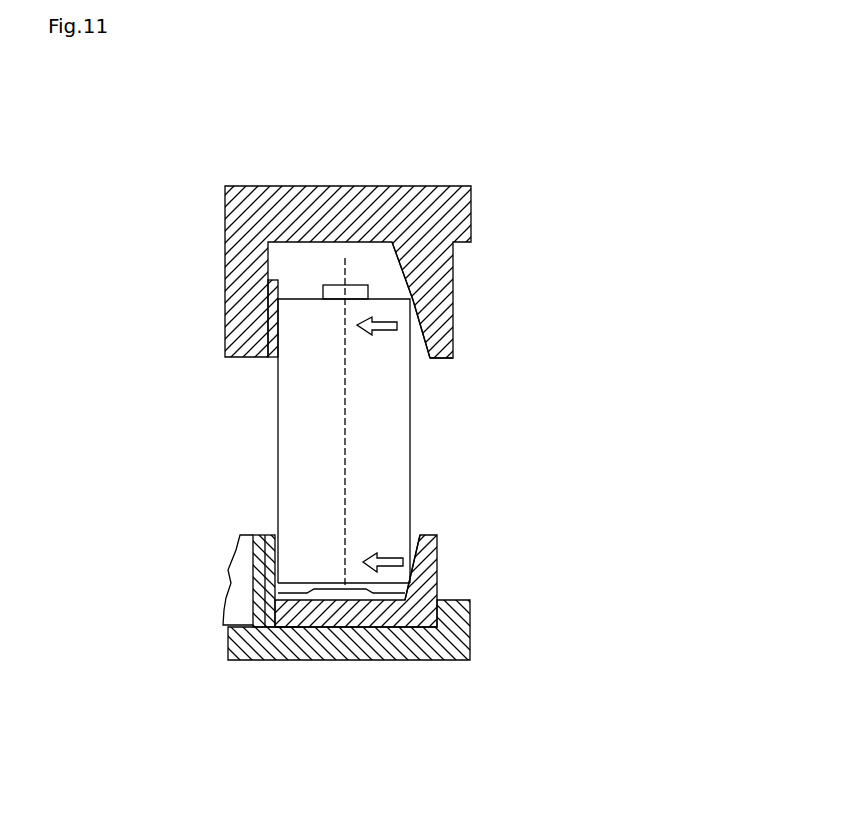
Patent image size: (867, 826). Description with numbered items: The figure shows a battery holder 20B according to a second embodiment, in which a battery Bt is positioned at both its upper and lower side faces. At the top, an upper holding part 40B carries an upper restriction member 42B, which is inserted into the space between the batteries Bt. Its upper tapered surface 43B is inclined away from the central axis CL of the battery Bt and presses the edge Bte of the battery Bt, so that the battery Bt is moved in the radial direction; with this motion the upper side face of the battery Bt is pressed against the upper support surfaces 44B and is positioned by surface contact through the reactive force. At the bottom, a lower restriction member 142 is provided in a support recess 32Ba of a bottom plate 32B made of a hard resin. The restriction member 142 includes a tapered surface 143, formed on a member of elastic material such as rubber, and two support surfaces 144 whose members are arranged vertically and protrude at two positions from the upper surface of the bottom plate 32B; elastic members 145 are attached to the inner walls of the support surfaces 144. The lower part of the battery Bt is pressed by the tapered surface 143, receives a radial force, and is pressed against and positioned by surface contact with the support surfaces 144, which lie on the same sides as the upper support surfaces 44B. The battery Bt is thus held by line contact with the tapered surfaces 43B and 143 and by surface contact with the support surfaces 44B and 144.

The battery holder 20B is at (517, 200).
The upper holding member 40B is at (418, 186).
The upper restriction member 42B is at (435, 265).
The edge of the battery Bte is at (413, 292).
The upper tapered surface 43B is at (424, 342).
The upper support surfaces 44B is at (272, 357).
The battery Bt is at (411, 432).
The central axis of the battery CL is at (345, 486).
The lower restriction member 142 is at (165, 450).
The lower tapered surface 143 is at (418, 553).
The lower support surfaces 144 is at (275, 535).
The elastic members 145 is at (253, 580).
The bottom plate 32B is at (228, 640).
The support recess 32Ba is at (287, 620).